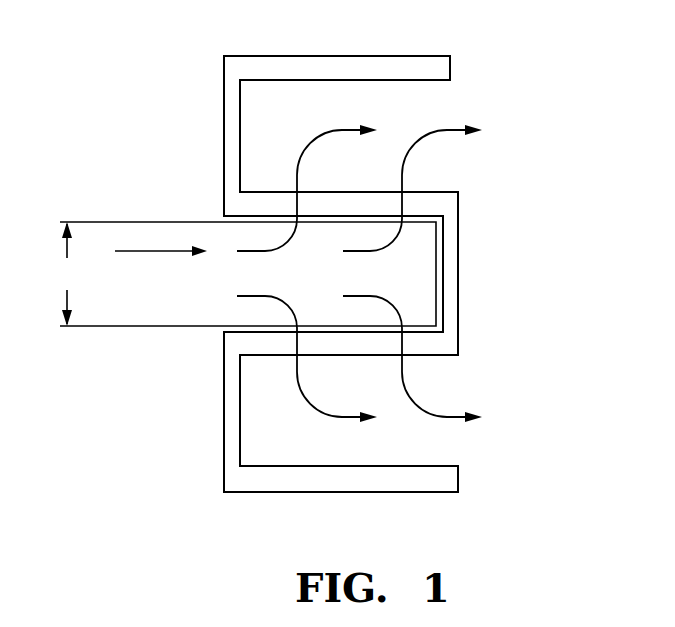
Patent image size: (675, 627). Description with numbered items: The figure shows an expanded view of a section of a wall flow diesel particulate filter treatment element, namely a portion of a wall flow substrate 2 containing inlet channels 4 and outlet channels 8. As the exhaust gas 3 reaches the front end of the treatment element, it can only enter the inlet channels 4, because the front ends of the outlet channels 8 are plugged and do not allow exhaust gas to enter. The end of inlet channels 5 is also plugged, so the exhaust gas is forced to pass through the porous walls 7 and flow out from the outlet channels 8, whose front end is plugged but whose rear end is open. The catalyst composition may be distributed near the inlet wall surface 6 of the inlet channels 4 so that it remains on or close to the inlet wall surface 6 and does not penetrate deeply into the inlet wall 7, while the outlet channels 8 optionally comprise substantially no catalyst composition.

The wall flow substrate 2 is at (223, 67).
The exhaust gas 3 is at (150, 250).
The inlet channels 4 is at (237, 308).
The end of inlet channels 5 is at (458, 282).
The inlet wall surface 6 is at (66, 274).
The porous walls 7 is at (283, 206).
The outlet channels 8 is at (415, 105).